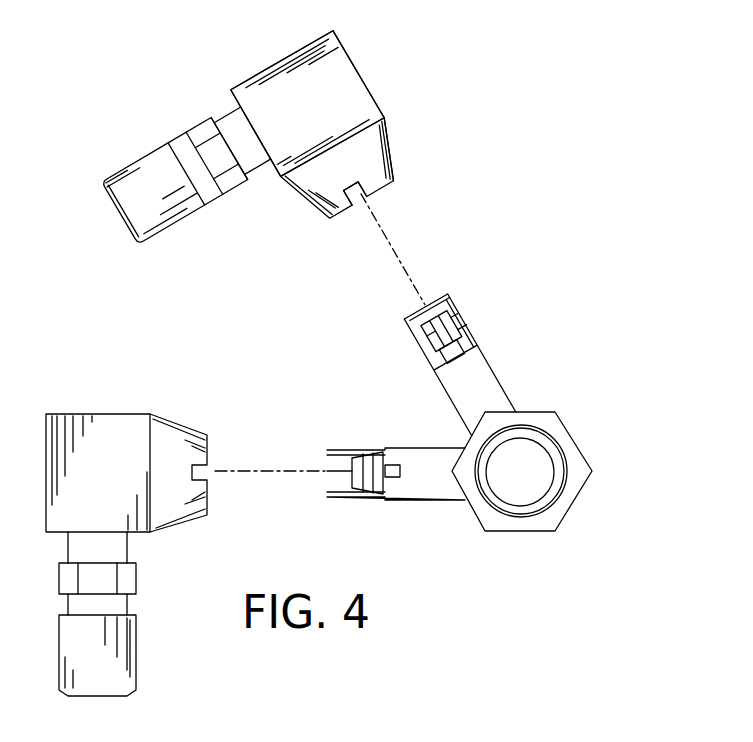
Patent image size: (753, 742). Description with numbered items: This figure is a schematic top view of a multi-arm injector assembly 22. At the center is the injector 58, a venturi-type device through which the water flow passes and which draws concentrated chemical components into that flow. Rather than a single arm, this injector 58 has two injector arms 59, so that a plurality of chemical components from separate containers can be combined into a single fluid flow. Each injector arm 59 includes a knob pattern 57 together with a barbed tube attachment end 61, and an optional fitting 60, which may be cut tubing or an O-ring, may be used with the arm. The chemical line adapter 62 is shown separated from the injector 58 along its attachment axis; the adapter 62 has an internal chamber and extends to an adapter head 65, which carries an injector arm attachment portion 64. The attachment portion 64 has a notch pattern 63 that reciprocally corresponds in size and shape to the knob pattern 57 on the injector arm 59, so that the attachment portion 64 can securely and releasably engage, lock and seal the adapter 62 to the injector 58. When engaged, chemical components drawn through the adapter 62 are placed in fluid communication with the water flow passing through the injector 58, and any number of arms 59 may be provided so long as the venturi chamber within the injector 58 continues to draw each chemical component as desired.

The injector assembly 22 is at (163, 326).
The knob pattern 57 is at (438, 373).
The injector 58 is at (582, 486).
The injector arm 59 is at (497, 376).
The fitting 60 is at (452, 300).
The barbed tube attachment end 61 is at (440, 345).
The chemical line adapter 62 is at (368, 82).
The notch pattern 63 is at (358, 203).
The injector arm attachment portion 64 is at (390, 153).
The adapter head 65 is at (325, 115).